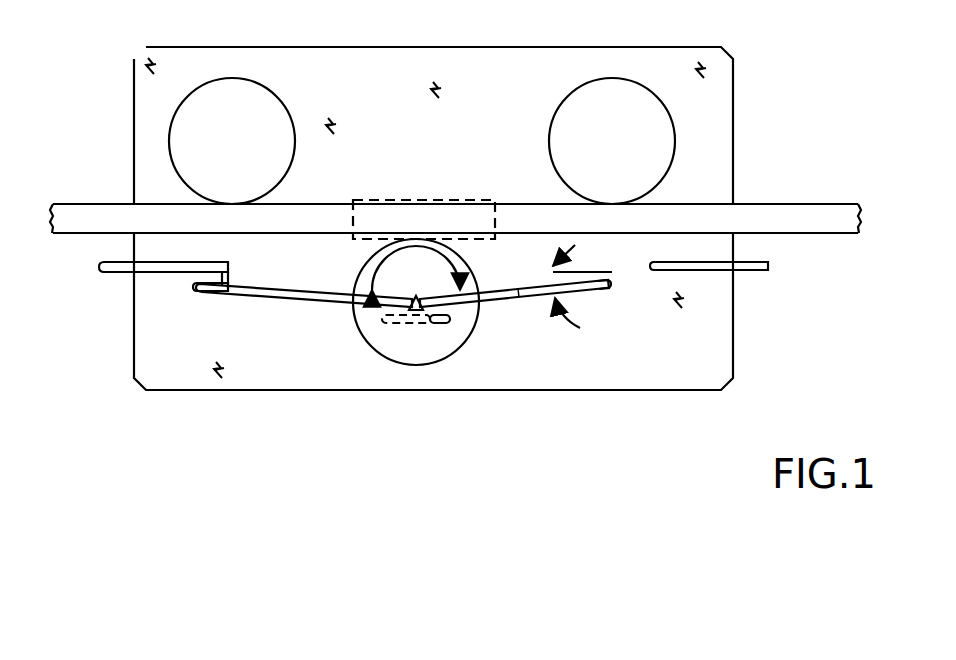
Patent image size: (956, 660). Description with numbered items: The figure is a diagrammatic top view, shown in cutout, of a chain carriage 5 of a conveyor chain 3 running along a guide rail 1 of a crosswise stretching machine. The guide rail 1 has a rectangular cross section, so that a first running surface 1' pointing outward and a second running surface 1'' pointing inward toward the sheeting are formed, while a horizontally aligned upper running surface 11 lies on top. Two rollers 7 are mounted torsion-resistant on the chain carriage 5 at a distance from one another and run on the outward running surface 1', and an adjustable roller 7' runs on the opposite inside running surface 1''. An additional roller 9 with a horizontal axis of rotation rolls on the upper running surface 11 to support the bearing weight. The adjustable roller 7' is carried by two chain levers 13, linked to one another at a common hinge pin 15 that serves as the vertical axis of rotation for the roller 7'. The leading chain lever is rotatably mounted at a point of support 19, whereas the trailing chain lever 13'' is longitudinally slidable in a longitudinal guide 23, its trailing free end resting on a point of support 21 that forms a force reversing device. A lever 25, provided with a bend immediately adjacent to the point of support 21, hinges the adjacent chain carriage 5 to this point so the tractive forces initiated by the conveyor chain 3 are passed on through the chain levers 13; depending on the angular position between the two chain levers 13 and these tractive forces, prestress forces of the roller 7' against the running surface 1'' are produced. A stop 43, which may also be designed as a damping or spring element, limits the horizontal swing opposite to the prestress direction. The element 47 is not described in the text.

The guide rail 1 is at (441, 205).
The first running surface 1' is at (450, 173).
The second running surface 1'' is at (440, 258).
The conveyor chain 3 is at (479, 203).
The chain carriage 5 is at (475, 47).
The rollers 7 is at (422, 139).
The adjustable roller 7' is at (416, 332).
The roller 9 is at (400, 200).
The upper running surface 11 is at (441, 213).
The chain levers 13 is at (515, 363).
The trailing chain lever 13'' is at (304, 322).
The common hinge pin 15 is at (410, 301).
The point of support 19 is at (607, 289).
The point of support 21 is at (228, 287).
The longitudinal guide 23 is at (200, 290).
The lever 25 is at (118, 270).
The stop 43 is at (375, 325).
The contact element 47 is at (440, 323).